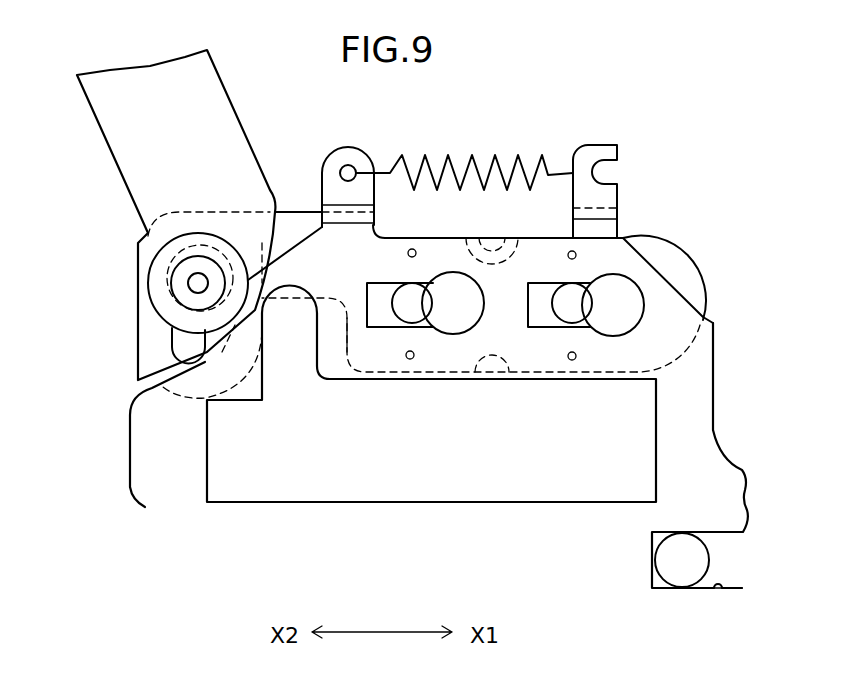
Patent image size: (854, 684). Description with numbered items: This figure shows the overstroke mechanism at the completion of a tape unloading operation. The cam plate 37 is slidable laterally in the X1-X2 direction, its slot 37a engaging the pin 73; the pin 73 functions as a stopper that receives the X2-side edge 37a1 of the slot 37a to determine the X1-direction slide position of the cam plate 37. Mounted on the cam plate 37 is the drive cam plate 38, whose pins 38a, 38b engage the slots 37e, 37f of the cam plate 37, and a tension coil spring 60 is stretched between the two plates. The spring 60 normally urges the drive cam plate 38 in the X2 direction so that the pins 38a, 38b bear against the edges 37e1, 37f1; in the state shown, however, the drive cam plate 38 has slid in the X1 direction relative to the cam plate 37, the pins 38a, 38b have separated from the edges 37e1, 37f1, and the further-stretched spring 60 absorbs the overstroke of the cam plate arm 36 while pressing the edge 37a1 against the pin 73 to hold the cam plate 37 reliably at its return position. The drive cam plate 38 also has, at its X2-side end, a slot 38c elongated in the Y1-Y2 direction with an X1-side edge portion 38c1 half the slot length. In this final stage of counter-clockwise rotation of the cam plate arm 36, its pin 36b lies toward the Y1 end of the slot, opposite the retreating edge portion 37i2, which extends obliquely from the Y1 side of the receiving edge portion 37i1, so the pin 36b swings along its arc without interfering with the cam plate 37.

The cam plate arm 36 is at (115, 140).
The pin 36b is at (180, 280).
The cam plate 37 is at (713, 410).
The slot 37a is at (740, 592).
The X2-side edge 37a1 is at (652, 560).
The slot 37e is at (385, 318).
The edge 37e1 is at (347, 318).
The slot 37f is at (558, 318).
The edge 37f1 is at (540, 318).
The receiving edge portion 37i1 is at (160, 377).
The retreating edge portion 37i2 is at (255, 245).
The drive cam plate 38 is at (688, 262).
The pin 38a is at (413, 317).
The pin 38b is at (585, 320).
The slot 38c is at (145, 297).
The edge portion 38c1 is at (222, 352).
The tension coil spring 60 is at (478, 160).
The pin 73 is at (680, 578).